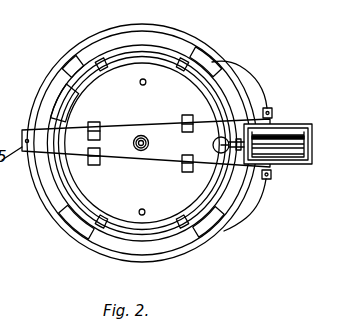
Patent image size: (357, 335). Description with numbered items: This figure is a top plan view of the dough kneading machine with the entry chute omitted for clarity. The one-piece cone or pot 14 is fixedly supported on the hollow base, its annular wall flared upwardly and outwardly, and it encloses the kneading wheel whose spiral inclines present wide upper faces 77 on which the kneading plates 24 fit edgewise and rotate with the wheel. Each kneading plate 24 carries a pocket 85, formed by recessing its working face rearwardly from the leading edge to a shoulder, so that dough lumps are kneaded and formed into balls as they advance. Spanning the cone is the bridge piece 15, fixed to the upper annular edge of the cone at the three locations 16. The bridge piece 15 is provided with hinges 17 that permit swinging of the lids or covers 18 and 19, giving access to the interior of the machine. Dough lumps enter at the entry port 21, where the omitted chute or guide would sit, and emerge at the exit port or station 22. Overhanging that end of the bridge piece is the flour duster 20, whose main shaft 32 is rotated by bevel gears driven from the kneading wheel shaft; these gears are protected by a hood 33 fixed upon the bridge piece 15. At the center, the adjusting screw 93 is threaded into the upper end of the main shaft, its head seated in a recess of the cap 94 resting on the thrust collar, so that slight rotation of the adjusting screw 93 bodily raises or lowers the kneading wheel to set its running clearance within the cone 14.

The cone or pot 14 is at (82, 243).
The bridge piece 15 is at (162, 158).
The fixing locations 16 is at (273, 113).
The hinges 17 is at (97, 122).
The lid or cover 18 is at (192, 228).
The lid or cover 19 is at (110, 82).
The flour duster 20 is at (166, 118).
The entry port 21 is at (250, 190).
The exit port or station 22 is at (248, 103).
The kneading plates 24 is at (88, 75).
The main shaft 32 is at (233, 152).
The hood 33 is at (213, 146).
The wide upper faces of the spiral inclines 77 is at (150, 46).
The pocket 85 is at (176, 64).
The adjusting screw 93 is at (142, 135).
The cap 94 is at (139, 151).